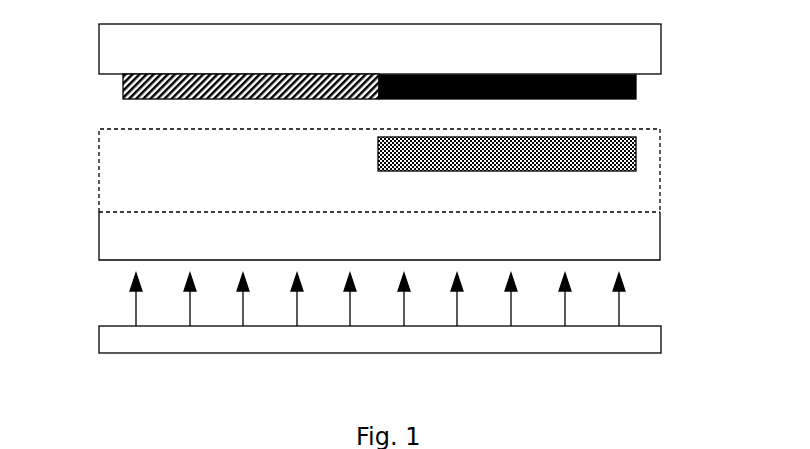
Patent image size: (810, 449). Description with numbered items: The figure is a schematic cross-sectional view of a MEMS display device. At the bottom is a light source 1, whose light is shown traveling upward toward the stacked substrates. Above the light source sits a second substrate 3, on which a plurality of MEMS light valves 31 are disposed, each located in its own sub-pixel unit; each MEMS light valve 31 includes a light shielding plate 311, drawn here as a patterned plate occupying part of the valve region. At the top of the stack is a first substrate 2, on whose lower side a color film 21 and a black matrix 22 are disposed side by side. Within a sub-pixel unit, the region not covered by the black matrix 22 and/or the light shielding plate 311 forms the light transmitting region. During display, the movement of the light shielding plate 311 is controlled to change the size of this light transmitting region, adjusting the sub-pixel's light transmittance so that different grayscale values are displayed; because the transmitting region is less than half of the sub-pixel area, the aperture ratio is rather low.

The light source 1 is at (661, 340).
The first substrate 2 is at (661, 51).
The color film 21 is at (123, 83).
The black matrix 22 is at (636, 87).
The second substrate 3 is at (660, 237).
The MEMS light valve 31 is at (660, 178).
The light shielding plate 311 is at (636, 149).